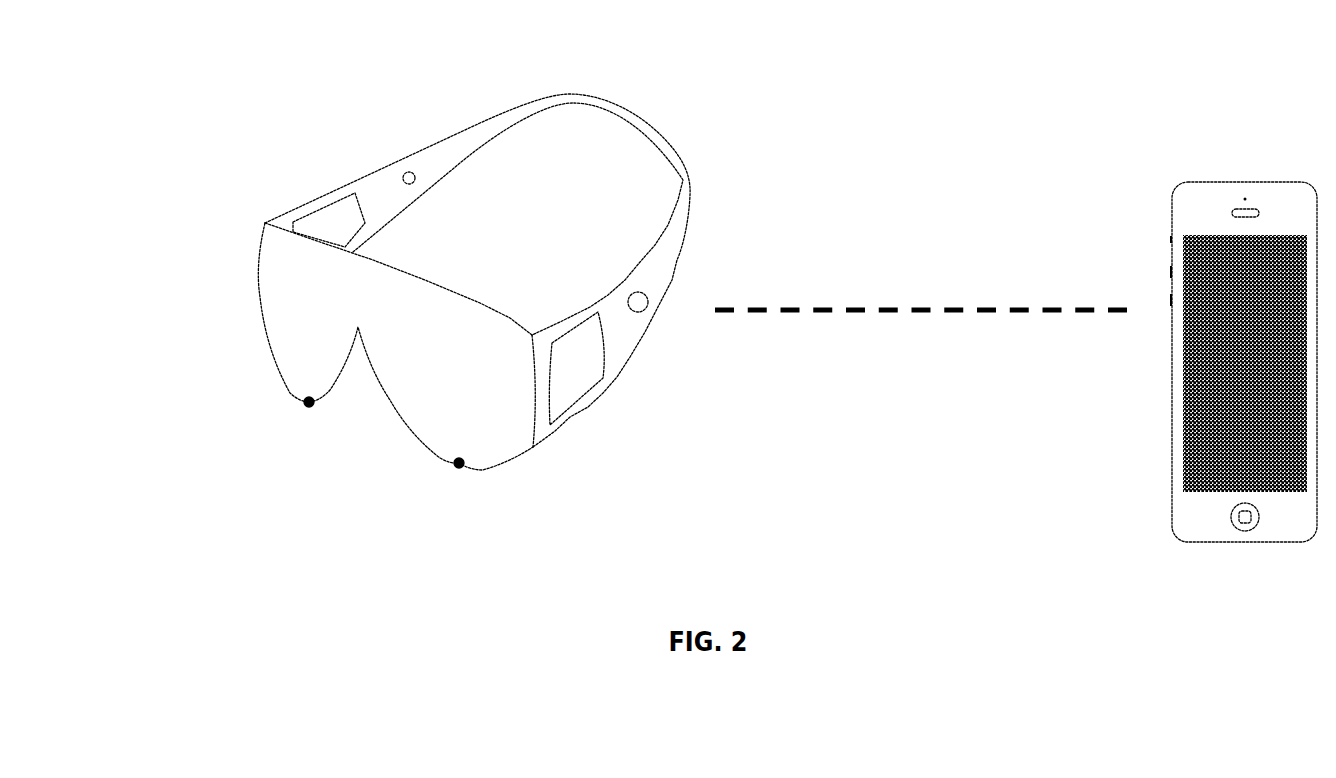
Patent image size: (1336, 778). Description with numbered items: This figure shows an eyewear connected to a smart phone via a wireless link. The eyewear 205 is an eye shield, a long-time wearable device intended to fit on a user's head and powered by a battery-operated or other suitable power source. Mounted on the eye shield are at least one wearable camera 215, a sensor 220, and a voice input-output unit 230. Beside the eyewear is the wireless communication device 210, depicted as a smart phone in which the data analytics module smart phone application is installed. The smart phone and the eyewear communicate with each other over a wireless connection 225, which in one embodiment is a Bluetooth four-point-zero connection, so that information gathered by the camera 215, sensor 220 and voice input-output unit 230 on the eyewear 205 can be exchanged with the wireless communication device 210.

The eyewear 205 is at (444, 300).
The wireless communication device 210 is at (1243, 332).
The wearable camera 215 is at (459, 463).
The sensor 220 is at (323, 211).
The wireless connection 225 is at (921, 272).
The voice input-output unit 230 is at (403, 175).